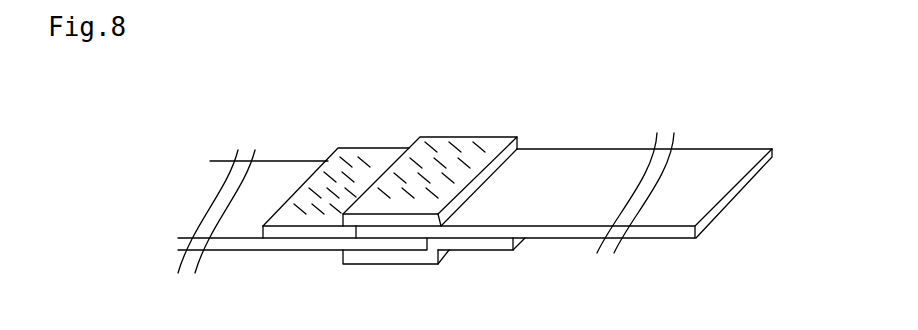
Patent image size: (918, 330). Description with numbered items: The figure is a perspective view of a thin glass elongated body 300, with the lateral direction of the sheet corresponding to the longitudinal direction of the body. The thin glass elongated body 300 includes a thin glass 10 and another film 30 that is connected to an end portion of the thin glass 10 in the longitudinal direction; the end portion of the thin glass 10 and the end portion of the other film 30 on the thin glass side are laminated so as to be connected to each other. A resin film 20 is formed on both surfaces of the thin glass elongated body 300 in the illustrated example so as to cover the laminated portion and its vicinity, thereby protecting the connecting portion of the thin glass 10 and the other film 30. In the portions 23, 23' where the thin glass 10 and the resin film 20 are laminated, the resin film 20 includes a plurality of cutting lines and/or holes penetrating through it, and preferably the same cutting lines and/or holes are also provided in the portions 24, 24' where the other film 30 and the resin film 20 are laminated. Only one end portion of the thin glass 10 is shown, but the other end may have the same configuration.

The thin glass elongated body 300 is at (682, 93).
The thin glass 10 is at (282, 245).
The resin film 20 is at (515, 136).
The portion in which the thin glass and the resin film are laminated 23 is at (336, 166).
The portion in which the other film and the resin film are laminated 24 is at (430, 160).
The portion in which the thin glass and the resin film are laminated 23' is at (390, 281).
The portion in which the other film and the resin film are laminated 24' is at (481, 275).
The other film 30 is at (677, 230).